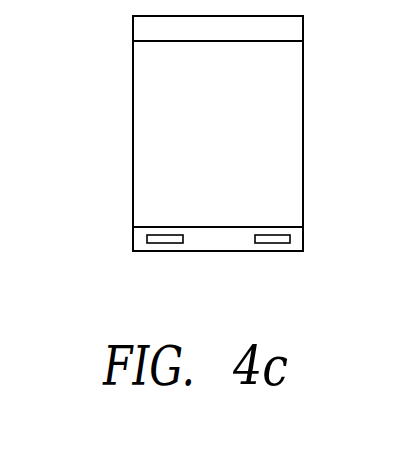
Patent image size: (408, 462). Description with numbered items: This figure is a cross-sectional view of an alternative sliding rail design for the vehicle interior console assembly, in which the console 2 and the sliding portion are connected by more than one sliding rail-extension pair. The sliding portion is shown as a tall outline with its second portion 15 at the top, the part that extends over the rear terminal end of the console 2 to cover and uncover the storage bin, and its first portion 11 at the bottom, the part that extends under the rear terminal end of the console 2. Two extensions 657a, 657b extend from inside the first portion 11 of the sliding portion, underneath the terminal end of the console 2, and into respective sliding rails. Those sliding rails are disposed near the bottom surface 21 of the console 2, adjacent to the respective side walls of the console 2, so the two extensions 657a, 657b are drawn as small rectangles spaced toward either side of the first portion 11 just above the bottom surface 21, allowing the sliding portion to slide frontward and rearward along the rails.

The console 2 is at (175, 145).
The second portion 15 is at (143, 30).
The first portion 11 is at (140, 242).
The bottom surface 21 is at (200, 227).
The extension 657b is at (157, 243).
The extension 657a is at (263, 243).